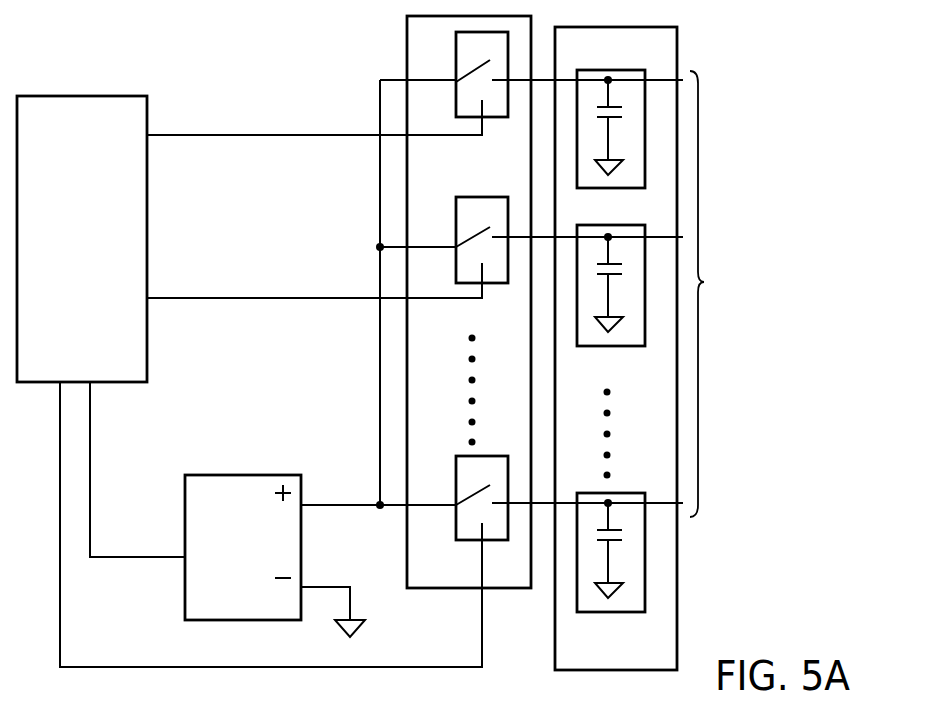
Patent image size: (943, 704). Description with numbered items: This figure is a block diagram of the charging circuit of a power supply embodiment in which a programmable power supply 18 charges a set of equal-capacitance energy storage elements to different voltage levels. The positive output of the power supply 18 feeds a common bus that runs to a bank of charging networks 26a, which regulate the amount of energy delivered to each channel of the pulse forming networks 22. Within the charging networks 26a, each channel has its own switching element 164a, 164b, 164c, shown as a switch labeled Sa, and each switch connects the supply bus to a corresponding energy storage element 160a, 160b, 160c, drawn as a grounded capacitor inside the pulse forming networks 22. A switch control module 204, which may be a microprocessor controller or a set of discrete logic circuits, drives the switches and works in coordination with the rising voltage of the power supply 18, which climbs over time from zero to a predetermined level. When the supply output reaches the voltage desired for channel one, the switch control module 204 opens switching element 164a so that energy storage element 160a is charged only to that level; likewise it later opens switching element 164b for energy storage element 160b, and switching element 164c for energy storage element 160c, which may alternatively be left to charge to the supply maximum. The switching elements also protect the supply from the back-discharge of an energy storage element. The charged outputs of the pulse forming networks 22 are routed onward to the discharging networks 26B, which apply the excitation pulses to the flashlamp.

The switch control module 204 is at (140, 374).
The power supply 18 is at (220, 609).
The charging networks 26a is at (452, 46).
The pulse forming networks 22 is at (594, 59).
The switching element 164a is at (500, 122).
The switching element 164b is at (498, 286).
The switching element 164c is at (455, 531).
The energy storage element 160a is at (600, 190).
The energy storage element 160b is at (635, 348).
The energy storage element 160c is at (612, 613).
The discharging networks 26B is at (781, 294).